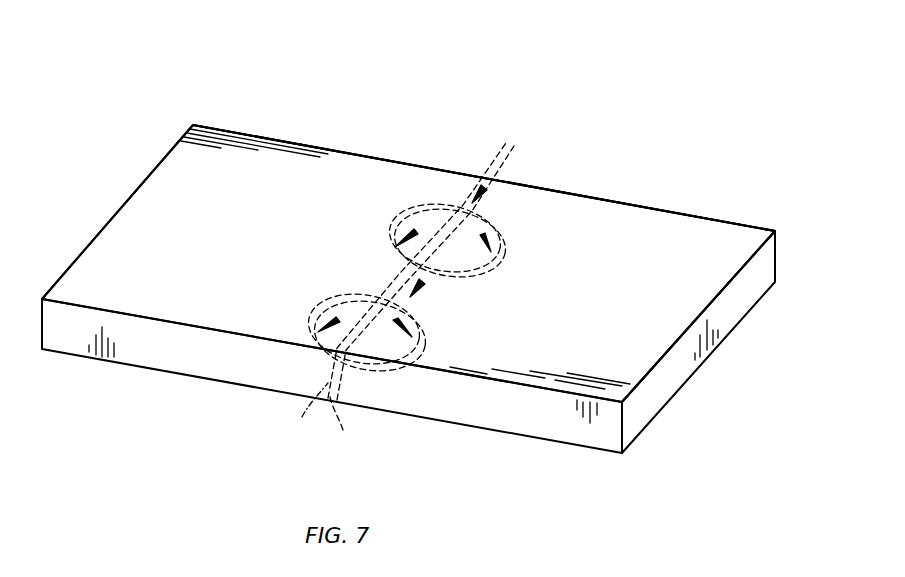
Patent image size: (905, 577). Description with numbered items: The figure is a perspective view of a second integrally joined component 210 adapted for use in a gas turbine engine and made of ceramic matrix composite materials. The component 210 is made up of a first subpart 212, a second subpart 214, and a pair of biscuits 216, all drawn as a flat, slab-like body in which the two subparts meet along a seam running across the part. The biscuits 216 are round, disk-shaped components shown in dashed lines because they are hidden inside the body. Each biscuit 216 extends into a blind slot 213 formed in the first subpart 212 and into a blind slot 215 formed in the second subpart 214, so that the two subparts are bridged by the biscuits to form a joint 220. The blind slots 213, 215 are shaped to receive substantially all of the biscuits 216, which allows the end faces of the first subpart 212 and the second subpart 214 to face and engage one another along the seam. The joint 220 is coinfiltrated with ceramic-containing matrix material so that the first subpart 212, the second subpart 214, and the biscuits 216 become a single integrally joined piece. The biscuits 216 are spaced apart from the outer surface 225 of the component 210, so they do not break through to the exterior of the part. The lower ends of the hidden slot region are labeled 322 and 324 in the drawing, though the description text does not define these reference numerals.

The second integrally joined component 210 is at (590, 78).
The first subpart 212 is at (257, 135).
The second subpart 214 is at (690, 214).
The outer surface 225 is at (380, 183).
The joint 220 is at (431, 197).
The biscuits 216 is at (431, 258).
The blind slots 213 is at (413, 228).
The blind slots 215 is at (485, 230).
The channel outlet 322 is at (306, 412).
The channel outlet 324 is at (348, 427).